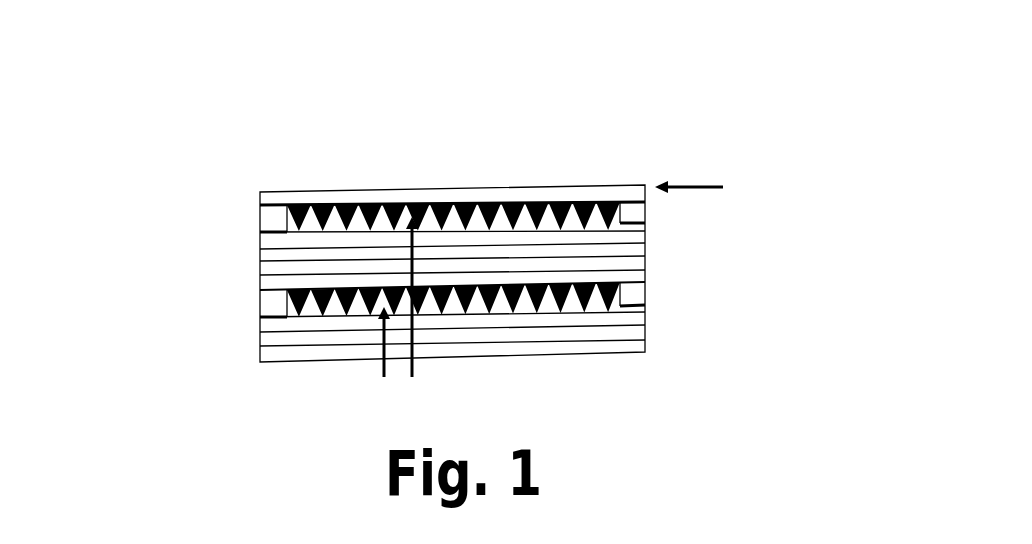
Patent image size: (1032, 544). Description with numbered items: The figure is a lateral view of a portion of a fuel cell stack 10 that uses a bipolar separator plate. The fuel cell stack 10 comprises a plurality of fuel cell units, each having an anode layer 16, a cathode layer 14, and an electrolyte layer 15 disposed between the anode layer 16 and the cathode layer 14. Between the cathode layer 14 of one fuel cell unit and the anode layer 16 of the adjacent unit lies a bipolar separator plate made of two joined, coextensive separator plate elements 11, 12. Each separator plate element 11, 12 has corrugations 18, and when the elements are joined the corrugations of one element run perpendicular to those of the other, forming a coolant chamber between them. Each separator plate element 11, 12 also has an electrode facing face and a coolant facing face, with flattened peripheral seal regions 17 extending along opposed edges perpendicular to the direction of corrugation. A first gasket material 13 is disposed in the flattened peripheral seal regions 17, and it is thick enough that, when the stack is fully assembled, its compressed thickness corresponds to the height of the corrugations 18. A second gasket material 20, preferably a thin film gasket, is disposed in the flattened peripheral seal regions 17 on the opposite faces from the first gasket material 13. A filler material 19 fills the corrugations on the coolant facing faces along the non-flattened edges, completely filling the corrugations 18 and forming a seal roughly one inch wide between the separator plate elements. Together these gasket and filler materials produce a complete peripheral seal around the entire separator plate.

The fuel cell stack 10 is at (622, 118).
The separator plate element 11 is at (262, 312).
The separator plate element 12 is at (630, 292).
The first gasket material 13 is at (263, 210).
The cathode layer 14 is at (262, 243).
The electrolyte layer 15 is at (270, 258).
The anode layer 16 is at (270, 288).
The flattened peripheral seal region 17 is at (268, 226).
The corrugations 18 is at (421, 202).
The filler material 19 is at (337, 202).
The second gasket material 20 is at (268, 318).